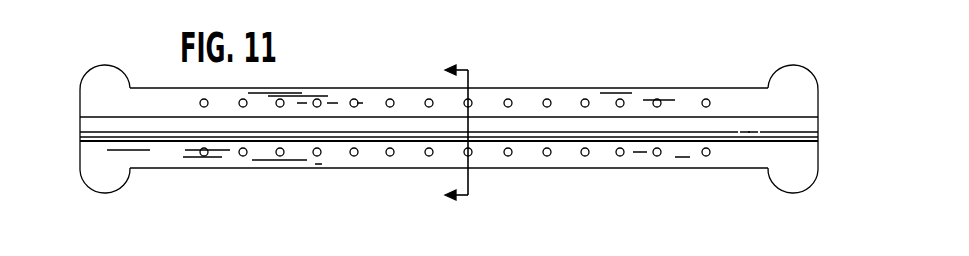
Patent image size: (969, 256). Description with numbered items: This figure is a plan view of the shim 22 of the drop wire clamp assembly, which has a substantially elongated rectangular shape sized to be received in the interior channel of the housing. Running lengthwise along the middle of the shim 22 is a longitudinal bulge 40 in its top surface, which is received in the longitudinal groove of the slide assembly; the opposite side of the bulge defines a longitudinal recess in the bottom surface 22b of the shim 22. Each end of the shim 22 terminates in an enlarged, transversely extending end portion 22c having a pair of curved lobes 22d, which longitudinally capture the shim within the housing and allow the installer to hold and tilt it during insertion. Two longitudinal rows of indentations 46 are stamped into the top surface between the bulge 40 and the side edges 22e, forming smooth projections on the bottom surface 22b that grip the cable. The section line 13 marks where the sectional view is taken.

The shim 22 is at (541, 81).
The bottom surface of the shim 22b is at (733, 103).
The end portion 22c is at (83, 150).
The curved lobes 22d is at (98, 80).
The side edges of the shim 22e is at (337, 86).
The longitudinal bulge 40 is at (172, 133).
The indentations 46 is at (280, 156).
The section line 13- 13 is at (459, 132).